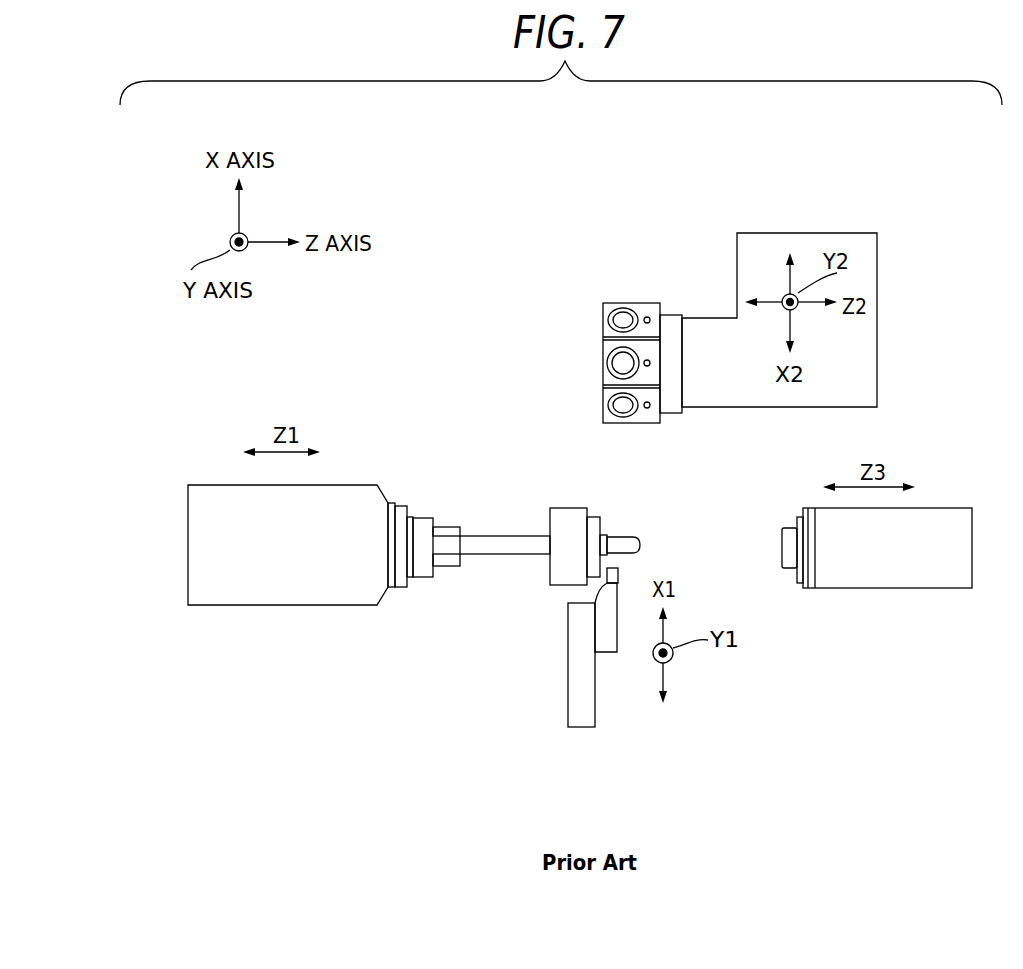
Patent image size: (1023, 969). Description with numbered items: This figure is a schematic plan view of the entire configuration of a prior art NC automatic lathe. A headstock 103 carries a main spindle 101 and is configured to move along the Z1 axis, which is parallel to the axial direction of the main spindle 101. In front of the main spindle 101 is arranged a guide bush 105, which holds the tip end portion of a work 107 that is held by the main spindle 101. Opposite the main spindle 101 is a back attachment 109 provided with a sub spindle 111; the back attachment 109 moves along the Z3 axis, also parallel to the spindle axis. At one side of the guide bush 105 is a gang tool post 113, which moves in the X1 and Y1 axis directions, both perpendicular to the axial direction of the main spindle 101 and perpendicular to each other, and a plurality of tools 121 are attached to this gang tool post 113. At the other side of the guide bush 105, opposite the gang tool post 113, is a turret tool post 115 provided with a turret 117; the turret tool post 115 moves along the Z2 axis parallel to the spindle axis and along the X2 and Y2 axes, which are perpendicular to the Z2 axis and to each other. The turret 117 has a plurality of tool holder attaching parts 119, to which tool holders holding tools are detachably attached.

The main spindle 101 is at (422, 517).
The headstock 103 is at (333, 593).
The guide bush 105 is at (568, 523).
The work 107 is at (508, 547).
The back attachment 109 is at (923, 590).
The sub spindle 111 is at (785, 570).
The gang tool post 113 is at (592, 740).
The turret tool post 115 is at (863, 367).
The turret 117 is at (647, 303).
The tool holder attaching parts 119 is at (608, 305).
The tools 121 is at (618, 570).